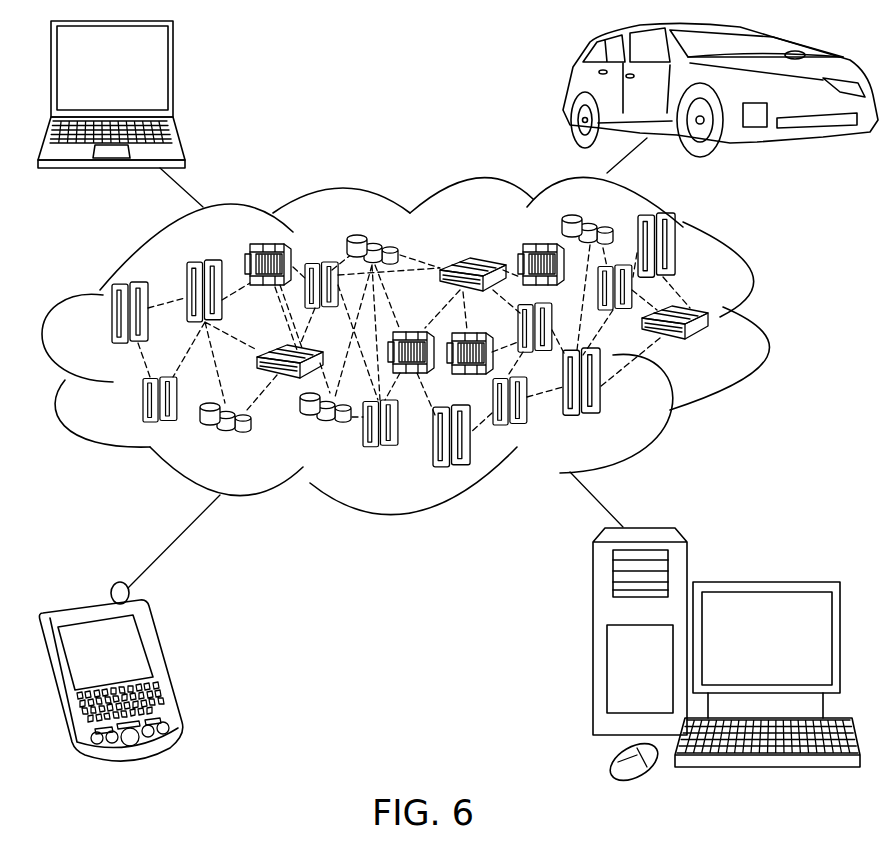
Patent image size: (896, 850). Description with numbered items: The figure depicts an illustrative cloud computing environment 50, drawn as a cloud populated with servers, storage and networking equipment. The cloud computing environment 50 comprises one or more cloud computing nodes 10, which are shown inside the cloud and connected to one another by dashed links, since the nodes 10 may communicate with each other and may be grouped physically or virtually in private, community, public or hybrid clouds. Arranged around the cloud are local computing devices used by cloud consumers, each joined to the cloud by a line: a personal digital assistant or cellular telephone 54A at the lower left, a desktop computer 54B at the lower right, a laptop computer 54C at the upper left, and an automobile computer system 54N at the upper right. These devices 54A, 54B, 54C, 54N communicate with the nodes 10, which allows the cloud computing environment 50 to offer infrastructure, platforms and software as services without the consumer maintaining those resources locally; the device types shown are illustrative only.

The cloud computing node 10 is at (713, 348).
The cloud computing environment 50 is at (763, 320).
The personal digital assistant or cellular telephone 54A is at (163, 663).
The desktop computer 54B is at (763, 580).
The laptop computer 54C is at (175, 75).
The automobile computer system 54N is at (567, 93).